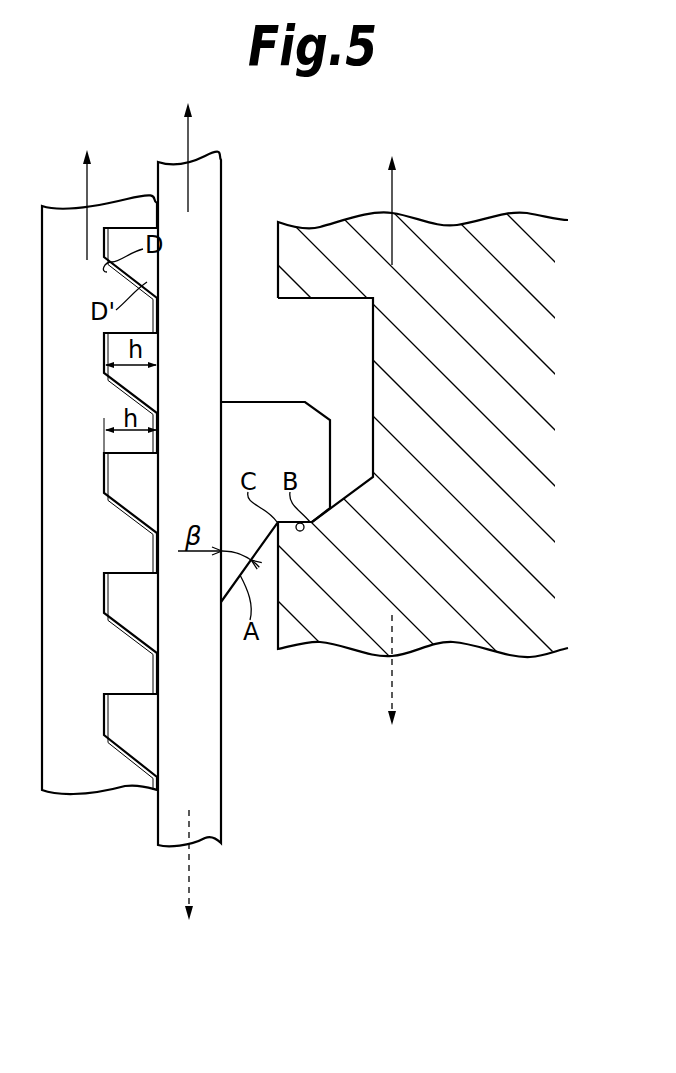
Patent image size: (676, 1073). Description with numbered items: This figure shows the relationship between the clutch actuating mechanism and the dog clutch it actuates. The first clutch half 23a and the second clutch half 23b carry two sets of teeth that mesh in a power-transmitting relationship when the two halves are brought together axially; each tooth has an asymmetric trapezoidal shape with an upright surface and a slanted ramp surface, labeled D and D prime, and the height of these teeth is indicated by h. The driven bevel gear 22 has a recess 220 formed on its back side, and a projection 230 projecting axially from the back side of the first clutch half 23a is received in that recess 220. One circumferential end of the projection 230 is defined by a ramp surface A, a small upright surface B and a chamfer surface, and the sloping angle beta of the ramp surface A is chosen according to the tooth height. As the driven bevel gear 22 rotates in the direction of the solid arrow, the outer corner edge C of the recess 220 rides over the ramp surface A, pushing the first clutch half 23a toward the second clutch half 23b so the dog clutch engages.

The driven bevel gear 22 is at (462, 634).
The recess 220 is at (340, 343).
The projection 230 is at (243, 420).
The first clutch half 23a is at (210, 805).
The second clutch half 23b is at (90, 780).